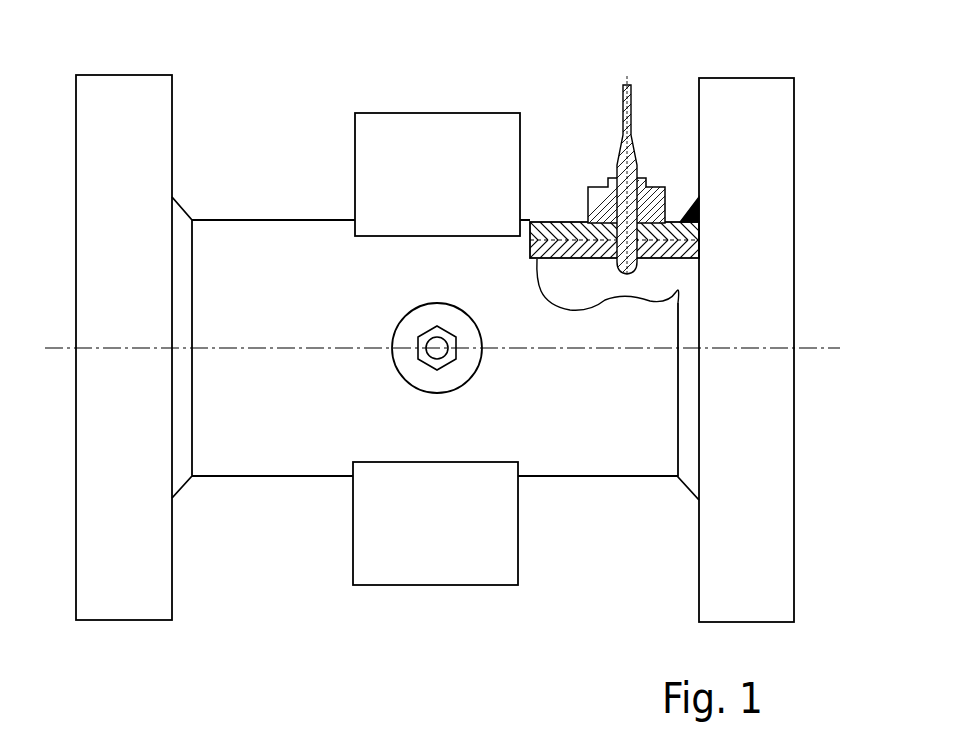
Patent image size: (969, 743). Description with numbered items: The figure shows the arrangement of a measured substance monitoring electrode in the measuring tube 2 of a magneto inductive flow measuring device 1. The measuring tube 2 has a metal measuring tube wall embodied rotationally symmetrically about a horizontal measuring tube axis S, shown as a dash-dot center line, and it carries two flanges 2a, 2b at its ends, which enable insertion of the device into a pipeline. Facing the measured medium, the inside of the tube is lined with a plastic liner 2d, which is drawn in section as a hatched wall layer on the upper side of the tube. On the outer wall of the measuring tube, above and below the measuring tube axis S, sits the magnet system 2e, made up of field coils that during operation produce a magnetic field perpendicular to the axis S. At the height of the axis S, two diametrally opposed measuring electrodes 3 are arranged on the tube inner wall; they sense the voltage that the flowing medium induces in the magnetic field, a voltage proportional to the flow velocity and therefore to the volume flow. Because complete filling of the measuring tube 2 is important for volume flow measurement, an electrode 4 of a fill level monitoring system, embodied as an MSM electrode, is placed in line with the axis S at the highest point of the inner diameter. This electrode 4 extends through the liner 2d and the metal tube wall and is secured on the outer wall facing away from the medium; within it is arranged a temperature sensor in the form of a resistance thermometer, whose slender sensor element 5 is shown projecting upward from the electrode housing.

The magneto inductive flow measuring device 1 is at (521, 325).
The measuring tube 2 is at (238, 460).
The flange 2a is at (733, 95).
The flange 2b is at (137, 93).
The liner 2d is at (672, 259).
The magnet system 2e is at (436, 349).
The measuring electrode 3 is at (408, 368).
The electrode of a fill level monitoring system 4 is at (607, 203).
The sensor 5 is at (637, 170).
The measuring tube axis S is at (50, 345).